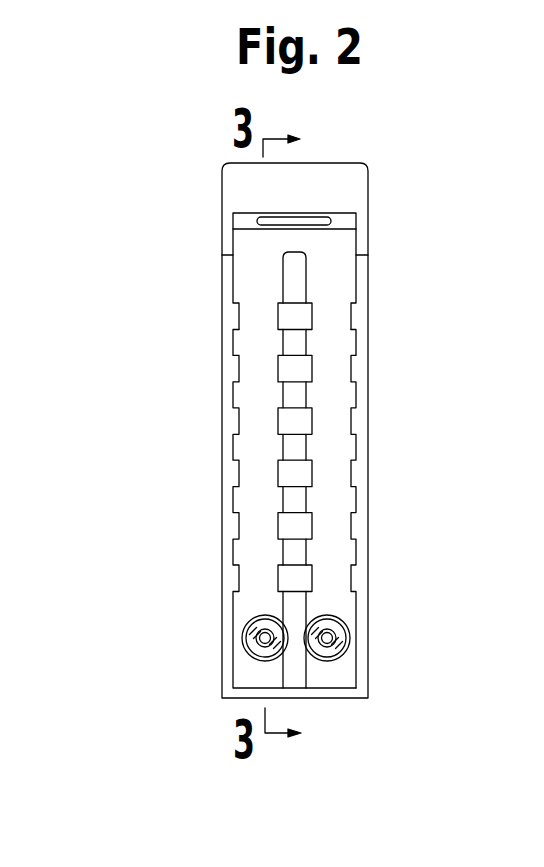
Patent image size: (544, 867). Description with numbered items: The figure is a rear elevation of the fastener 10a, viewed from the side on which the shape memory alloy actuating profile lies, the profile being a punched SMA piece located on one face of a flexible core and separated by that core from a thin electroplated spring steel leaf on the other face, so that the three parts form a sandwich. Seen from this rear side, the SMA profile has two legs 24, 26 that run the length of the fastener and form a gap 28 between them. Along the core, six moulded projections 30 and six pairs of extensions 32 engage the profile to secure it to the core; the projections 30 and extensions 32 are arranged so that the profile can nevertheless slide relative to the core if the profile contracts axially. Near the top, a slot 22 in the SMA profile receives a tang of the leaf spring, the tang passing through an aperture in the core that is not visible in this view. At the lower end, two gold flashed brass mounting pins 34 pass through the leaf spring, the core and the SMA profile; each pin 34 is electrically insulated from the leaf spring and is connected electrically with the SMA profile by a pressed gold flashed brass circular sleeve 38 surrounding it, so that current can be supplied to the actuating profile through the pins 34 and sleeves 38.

The fastener 10a is at (393, 133).
The slot 22 is at (352, 217).
The leg 24 is at (248, 500).
The leg 26 is at (338, 499).
The gap 28 is at (292, 548).
The moulded projections 30 is at (303, 418).
The extensions 32 is at (231, 315).
The mounting pins 34 is at (333, 622).
The circular sleeves 38 is at (349, 653).